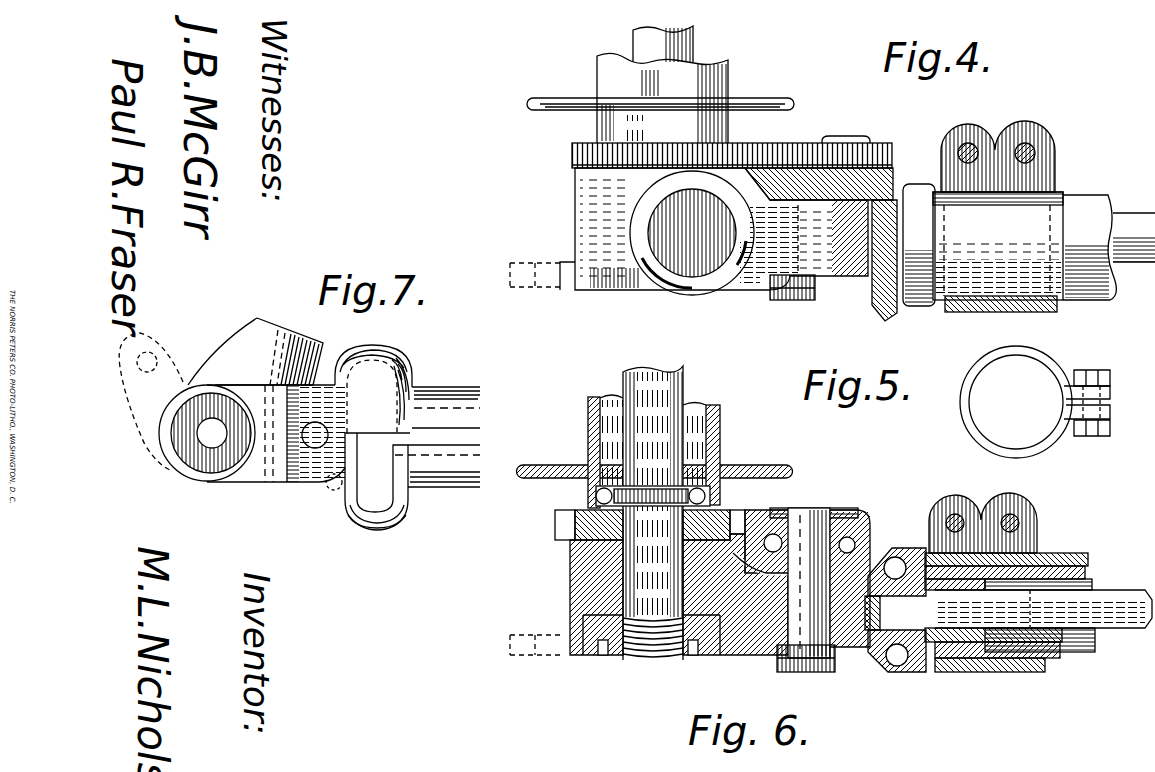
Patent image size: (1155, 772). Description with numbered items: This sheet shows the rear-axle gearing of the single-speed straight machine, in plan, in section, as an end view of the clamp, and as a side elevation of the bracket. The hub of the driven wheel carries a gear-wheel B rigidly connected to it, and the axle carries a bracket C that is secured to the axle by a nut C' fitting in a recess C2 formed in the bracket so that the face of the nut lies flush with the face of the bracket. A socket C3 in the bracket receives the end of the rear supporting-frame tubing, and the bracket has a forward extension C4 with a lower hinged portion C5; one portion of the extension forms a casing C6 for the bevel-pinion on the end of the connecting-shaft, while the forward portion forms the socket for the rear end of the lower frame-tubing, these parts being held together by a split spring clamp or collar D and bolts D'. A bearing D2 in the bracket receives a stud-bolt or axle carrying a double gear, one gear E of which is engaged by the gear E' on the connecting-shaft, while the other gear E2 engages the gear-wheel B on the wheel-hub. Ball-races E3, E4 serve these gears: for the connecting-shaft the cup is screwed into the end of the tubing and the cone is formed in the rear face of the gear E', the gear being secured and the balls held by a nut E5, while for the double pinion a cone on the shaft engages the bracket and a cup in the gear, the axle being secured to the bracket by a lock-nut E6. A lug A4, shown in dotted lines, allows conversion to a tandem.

In FIG. 4, the gear-wheel B is at (714, 157).
In FIG. 6, the gear-wheel B is at (556, 524).
In FIG. 4, the bracket C is at (714, 229).
In FIG. 6, the bracket C is at (664, 594).
In FIG. 6, the nut C' is at (651, 651).
In FIG. 6, the recess C2 is at (712, 657).
In FIG. 4, the socket C3 is at (692, 233).
In FIG. 7, the socket C3 is at (269, 351).
In FIG. 7, the forward extension C4 is at (412, 480).
In FIG. 7, the lower hinged portion C5 is at (377, 505).
In FIG. 7, the casing C6 is at (407, 381).
In FIG. 4, the lug A4 is at (529, 263).
In FIG. 6, the lug A4 is at (529, 632).
In FIG. 7, the lug A4 is at (151, 393).
In FIG. 4, the split spring clamp or collar D is at (1026, 233).
In FIG. 5, the split spring clamp or collar D is at (1051, 402).
In FIG. 6, the split spring clamp or collar D is at (1038, 626).
In FIG. 4, the bolts D' is at (1016, 156).
In FIG. 6, the bolts D' is at (1006, 523).
In FIG. 6, the bearing D2 is at (784, 660).
In FIG. 7, the bearing D2 is at (312, 447).
In FIG. 4, the gear E is at (919, 231).
In FIG. 6, the gear E is at (892, 528).
In FIG. 4, the gear E' is at (828, 253).
In FIG. 6, the gear E' is at (895, 630).
In FIG. 4, the gear E2 is at (872, 150).
In FIG. 6, the gear E2 is at (868, 520).
In FIG. 6, the ball-race E3 is at (778, 538).
In FIG. 6, the ball-race E4 is at (915, 672).
In FIG. 6, the nut E5 is at (883, 602).
In FIG. 4, the lock-nut E6 is at (803, 302).
In FIG. 6, the lock-nut E6 is at (820, 672).